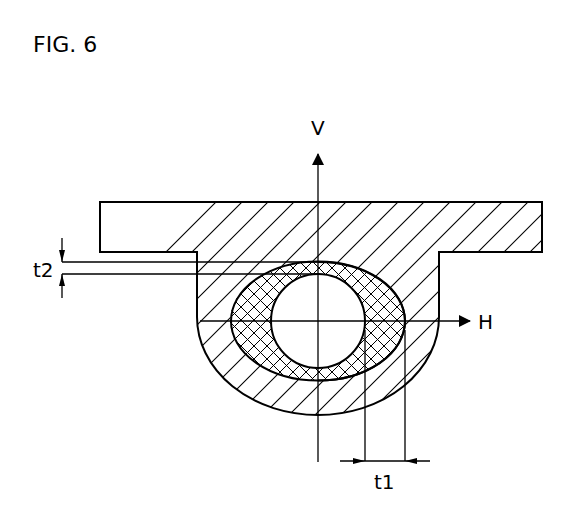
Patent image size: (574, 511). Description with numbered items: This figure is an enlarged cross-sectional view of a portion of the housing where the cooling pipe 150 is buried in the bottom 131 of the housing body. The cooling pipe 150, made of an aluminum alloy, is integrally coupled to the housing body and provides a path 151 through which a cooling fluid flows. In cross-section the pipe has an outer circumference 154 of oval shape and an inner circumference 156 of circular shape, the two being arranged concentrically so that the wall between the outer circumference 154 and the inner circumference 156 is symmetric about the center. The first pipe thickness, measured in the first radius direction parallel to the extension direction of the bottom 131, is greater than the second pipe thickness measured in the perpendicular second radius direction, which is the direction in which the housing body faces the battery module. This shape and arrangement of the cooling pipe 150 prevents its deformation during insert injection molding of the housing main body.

The bottom 131 is at (482, 205).
The cooling pipe 150 is at (415, 372).
The path 151 is at (308, 352).
The outer circumference 154 is at (385, 297).
The inner circumference 156 is at (279, 365).